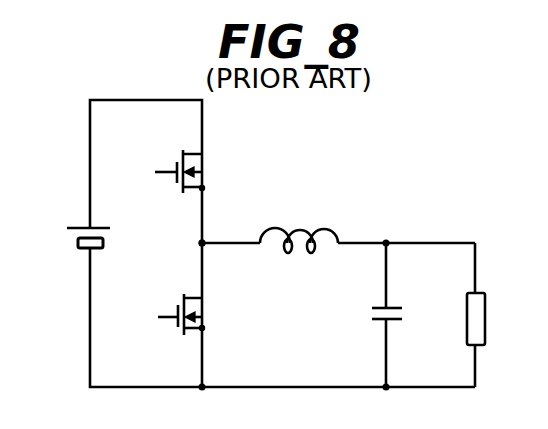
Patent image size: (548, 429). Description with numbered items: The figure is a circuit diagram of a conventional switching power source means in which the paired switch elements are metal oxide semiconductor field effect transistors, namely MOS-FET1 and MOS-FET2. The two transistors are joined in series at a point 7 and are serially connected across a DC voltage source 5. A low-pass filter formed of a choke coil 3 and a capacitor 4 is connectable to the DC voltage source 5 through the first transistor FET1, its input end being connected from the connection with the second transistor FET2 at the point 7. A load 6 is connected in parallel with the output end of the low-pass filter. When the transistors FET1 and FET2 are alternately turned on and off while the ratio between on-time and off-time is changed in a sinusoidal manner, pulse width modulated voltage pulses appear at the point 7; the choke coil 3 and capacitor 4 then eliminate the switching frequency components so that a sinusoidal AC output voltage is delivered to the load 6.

The choke coil 3 is at (304, 231).
The capacitor 4 is at (395, 308).
The DC voltage source 5 is at (80, 226).
The load 6 is at (487, 316).
The point 7 is at (204, 242).
The MOS- FET1 is at (198, 165).
The MOS- FET2 is at (198, 310).